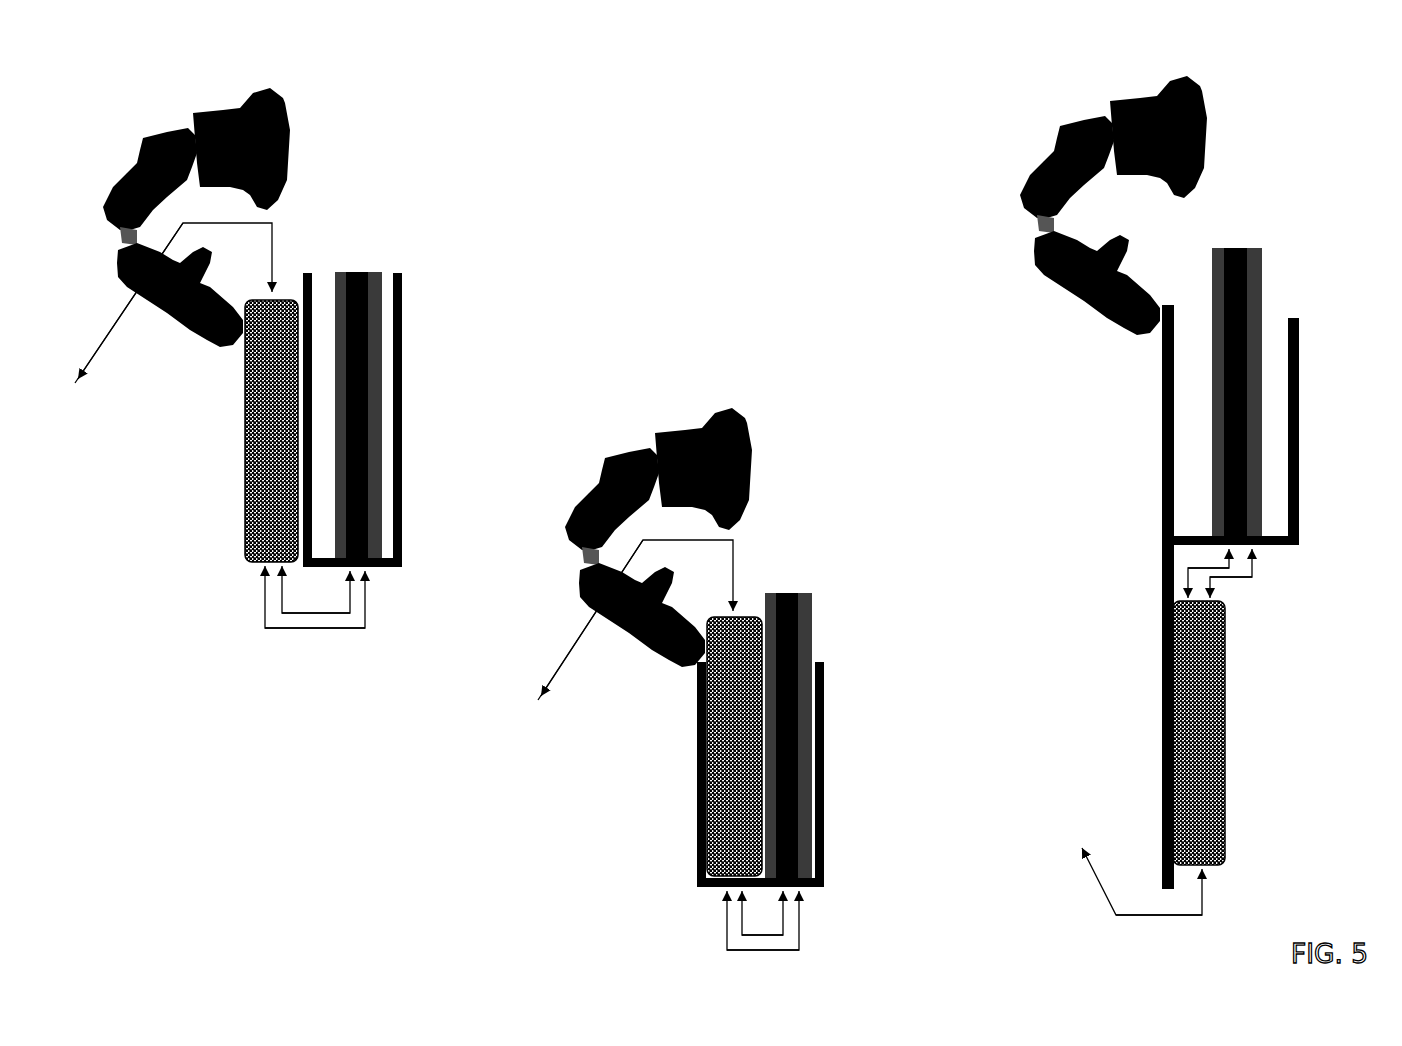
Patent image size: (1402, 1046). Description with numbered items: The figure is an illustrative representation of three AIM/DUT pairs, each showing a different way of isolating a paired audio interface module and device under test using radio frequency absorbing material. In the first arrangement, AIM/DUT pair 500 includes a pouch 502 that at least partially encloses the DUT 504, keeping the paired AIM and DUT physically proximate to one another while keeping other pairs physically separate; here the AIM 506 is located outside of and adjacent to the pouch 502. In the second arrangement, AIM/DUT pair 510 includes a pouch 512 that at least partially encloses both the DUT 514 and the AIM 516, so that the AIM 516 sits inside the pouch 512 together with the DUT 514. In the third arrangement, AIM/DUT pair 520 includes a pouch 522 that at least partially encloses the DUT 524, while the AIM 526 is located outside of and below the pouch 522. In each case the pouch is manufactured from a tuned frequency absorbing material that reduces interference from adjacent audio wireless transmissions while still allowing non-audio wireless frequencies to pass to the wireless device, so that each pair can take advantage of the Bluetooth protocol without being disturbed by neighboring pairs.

The AIM/DUT pair 500 is at (360, 80).
The pouch 502 is at (402, 338).
The DUT 504 is at (358, 272).
The AIM 506 is at (245, 460).
The AIM/DUT pair 510 is at (786, 383).
The pouch 512 is at (825, 692).
The DUT 514 is at (810, 597).
The AIM 516 is at (710, 760).
The AIM/DUT pair 520 is at (1005, 92).
The pouch 522 is at (1300, 328).
The DUT 524 is at (1258, 263).
The AIM 526 is at (1218, 726).